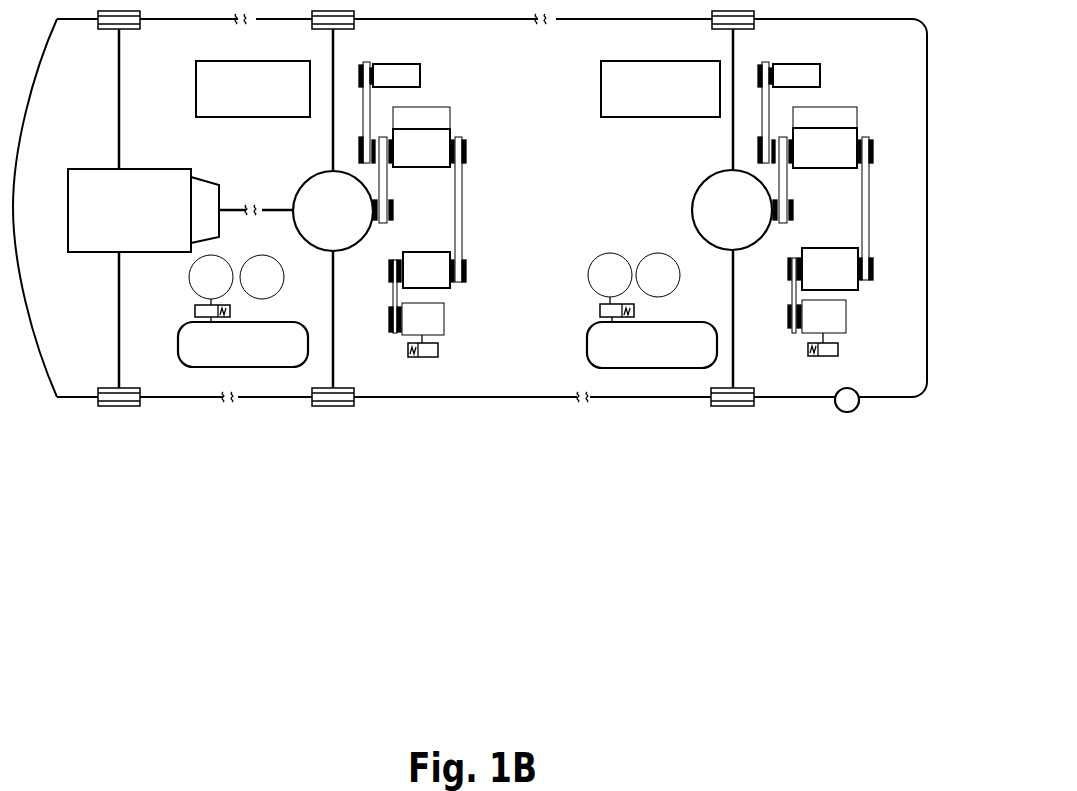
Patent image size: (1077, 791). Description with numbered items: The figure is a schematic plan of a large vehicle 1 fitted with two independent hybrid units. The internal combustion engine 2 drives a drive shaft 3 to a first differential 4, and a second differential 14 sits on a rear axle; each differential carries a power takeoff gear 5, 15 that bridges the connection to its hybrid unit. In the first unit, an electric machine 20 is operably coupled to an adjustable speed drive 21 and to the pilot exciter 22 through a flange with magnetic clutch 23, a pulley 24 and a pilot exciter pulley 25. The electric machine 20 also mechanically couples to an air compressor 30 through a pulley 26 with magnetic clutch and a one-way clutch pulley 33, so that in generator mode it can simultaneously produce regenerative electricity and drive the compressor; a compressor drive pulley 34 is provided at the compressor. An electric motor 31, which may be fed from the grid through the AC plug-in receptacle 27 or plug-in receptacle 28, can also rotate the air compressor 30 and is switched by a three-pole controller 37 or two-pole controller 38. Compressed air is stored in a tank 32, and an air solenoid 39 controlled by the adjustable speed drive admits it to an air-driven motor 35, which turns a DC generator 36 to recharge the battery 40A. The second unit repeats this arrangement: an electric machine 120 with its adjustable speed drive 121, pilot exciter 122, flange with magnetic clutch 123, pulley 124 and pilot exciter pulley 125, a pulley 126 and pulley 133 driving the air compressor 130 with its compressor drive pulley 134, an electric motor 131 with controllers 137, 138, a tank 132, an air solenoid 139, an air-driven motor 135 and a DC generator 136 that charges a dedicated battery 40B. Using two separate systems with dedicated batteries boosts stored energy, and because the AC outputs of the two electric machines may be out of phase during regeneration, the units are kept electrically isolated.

The vehicle 1 is at (182, 408).
The internal combustion engine 2 is at (177, 167).
The drive shaft 3 is at (234, 205).
The differential 4 is at (293, 228).
The power takeoff gear 5 is at (395, 208).
The differential 14 is at (691, 209).
The power takeoff gear 15 is at (795, 207).
The electric machine 20 is at (455, 128).
The adjustable speed drive 21 is at (448, 102).
The pilot exciter 22 is at (423, 75).
The flange with magnetic clutch 23 is at (383, 136).
The pulley 24 is at (362, 137).
The pilot exciter pulley 25 is at (389, 58).
The pulley 26 is at (468, 150).
The AC plug-in receptacle 27 is at (842, 422).
The plug-in receptacle 28 is at (835, 407).
The air compressor 30 is at (423, 250).
The electric motor 31 is at (447, 318).
The tank 32 is at (178, 347).
The pulley 33 is at (468, 268).
The compressor drive pulley 34 is at (389, 270).
The air-driven motor 35 is at (188, 277).
The DC generator 36 is at (327, 280).
The controller 37 is at (458, 347).
The controller 38 is at (441, 352).
The air solenoid 39 is at (194, 312).
The battery 40A is at (196, 88).
The battery 40B is at (601, 88).
The electric machine 120 is at (859, 127).
The adjustable speed drive 121 is at (848, 102).
The pilot exciter 122 is at (823, 75).
The flange with magnetic clutch 123 is at (783, 136).
The pulley 124 is at (760, 137).
The pilot exciter pulley 125 is at (780, 55).
The pulley 126 is at (875, 150).
The air compressor 130 is at (825, 246).
The electric motor 131 is at (848, 317).
The tank 132 is at (587, 345).
The pulley 133 is at (875, 267).
The compressor drive pulley 134 is at (788, 270).
The air-driven motor 135 is at (587, 277).
The DC generator 136 is at (718, 274).
The controller 137 is at (864, 344).
The controller 138 is at (841, 348).
The air solenoid 139 is at (598, 311).